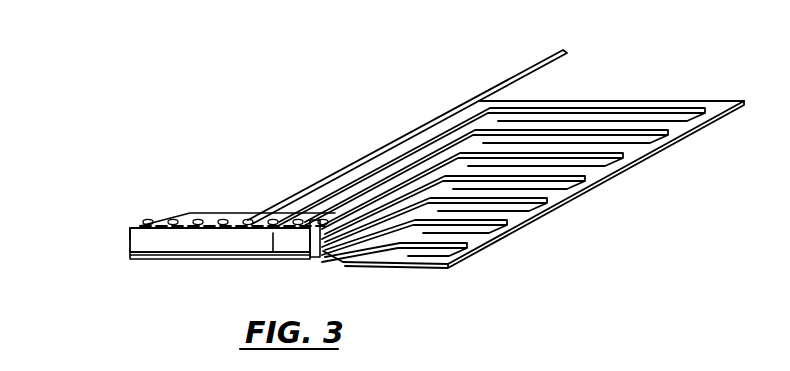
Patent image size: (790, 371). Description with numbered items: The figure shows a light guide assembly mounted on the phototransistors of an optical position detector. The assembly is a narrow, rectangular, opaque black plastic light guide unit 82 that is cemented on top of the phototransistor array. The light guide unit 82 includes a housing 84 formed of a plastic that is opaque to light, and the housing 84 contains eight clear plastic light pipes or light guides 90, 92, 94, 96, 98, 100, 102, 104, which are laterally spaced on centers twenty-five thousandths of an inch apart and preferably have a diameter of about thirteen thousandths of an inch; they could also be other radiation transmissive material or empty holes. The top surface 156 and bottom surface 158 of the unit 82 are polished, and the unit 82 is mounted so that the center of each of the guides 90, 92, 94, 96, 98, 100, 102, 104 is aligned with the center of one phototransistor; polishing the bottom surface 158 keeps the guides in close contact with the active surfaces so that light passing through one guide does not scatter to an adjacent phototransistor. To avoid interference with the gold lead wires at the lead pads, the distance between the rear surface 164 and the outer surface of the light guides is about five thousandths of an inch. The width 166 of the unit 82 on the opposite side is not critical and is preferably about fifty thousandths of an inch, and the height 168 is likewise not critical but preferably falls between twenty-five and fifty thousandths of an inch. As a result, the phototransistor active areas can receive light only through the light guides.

The light guide unit 82 is at (220, 241).
The housing 84 is at (147, 245).
The light guide 90 is at (143, 221).
The light guide 92 is at (175, 219).
The light guide 94 is at (197, 219).
The light guide 96 is at (226, 219).
The light guide 98 is at (250, 219).
The light guide 100 is at (268, 219).
The light guide 102 is at (292, 219).
The light guide 104 is at (315, 213).
The top surface 156 is at (131, 231).
The bottom surface 158 is at (155, 258).
The rear surface 164 is at (165, 222).
The width 166 is at (318, 253).
The height 168 is at (273, 260).